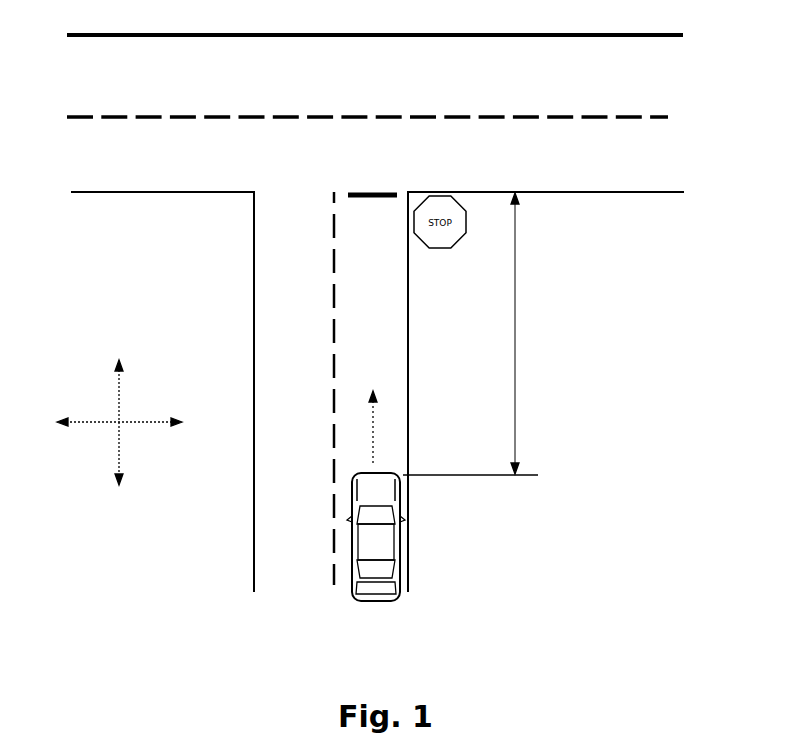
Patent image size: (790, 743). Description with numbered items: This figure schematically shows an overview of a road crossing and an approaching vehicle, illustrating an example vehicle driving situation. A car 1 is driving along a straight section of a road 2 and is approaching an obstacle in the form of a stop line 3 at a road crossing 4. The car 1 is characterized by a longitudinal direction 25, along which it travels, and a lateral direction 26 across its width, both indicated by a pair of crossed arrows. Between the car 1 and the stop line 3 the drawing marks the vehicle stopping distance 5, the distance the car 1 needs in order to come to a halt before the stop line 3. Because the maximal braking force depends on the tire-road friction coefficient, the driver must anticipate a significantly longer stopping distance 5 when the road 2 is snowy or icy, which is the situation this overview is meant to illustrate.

The car 1 is at (373, 547).
The road 2 is at (365, 347).
The stop line 3 is at (367, 198).
The road crossing 4 is at (282, 155).
The vehicle stopping distance 5 is at (515, 400).
The longitudinal direction 25 is at (133, 416).
The lateral direction 26 is at (121, 435).